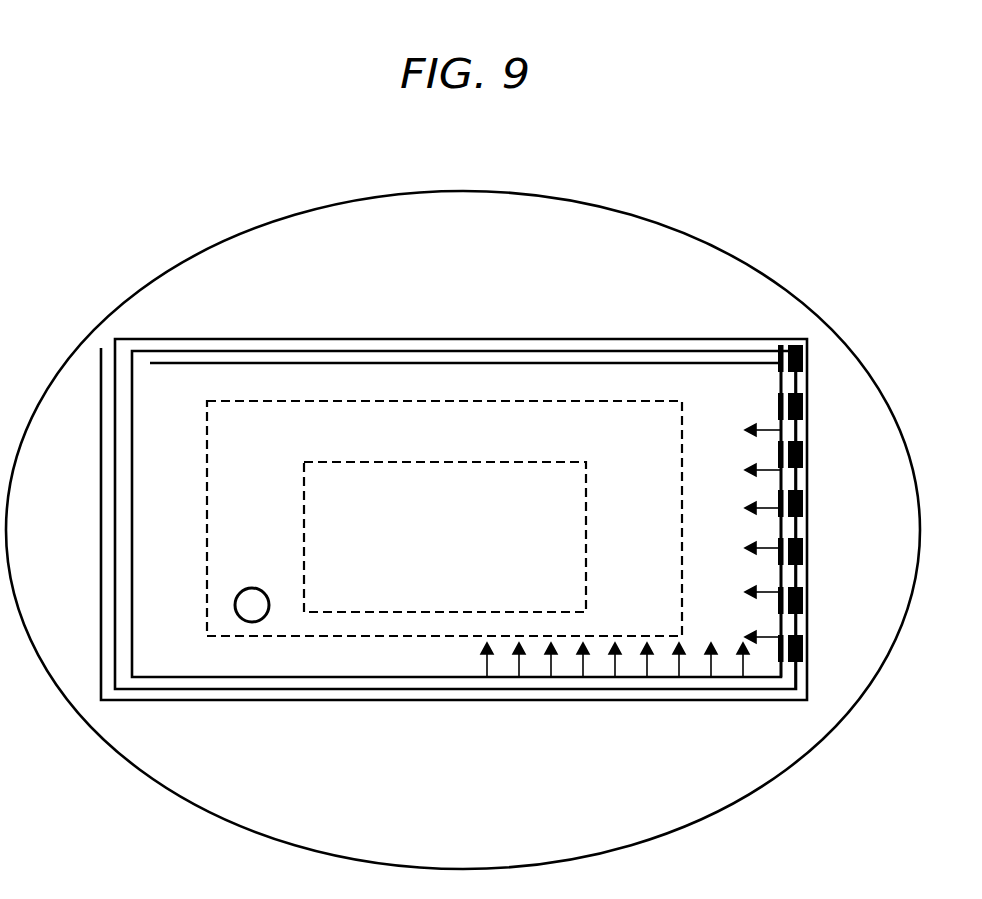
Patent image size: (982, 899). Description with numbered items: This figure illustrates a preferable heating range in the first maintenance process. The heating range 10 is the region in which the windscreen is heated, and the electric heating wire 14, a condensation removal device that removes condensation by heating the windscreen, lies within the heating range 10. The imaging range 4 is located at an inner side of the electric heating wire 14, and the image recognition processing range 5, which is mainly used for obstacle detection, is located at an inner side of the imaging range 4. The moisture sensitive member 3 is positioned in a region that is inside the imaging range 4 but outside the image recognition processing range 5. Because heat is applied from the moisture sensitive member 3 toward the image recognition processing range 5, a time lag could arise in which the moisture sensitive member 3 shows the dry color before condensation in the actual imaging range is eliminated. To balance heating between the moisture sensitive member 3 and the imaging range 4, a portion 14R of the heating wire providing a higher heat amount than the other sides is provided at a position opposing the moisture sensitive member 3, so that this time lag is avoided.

The heating range 10 is at (545, 193).
The electric heating wire 14 is at (470, 337).
The heating coil right portion 14R is at (803, 500).
The imaging range 4 is at (373, 403).
The image recognition processing range 5 is at (557, 460).
The moisture sensitive member 3 is at (249, 588).